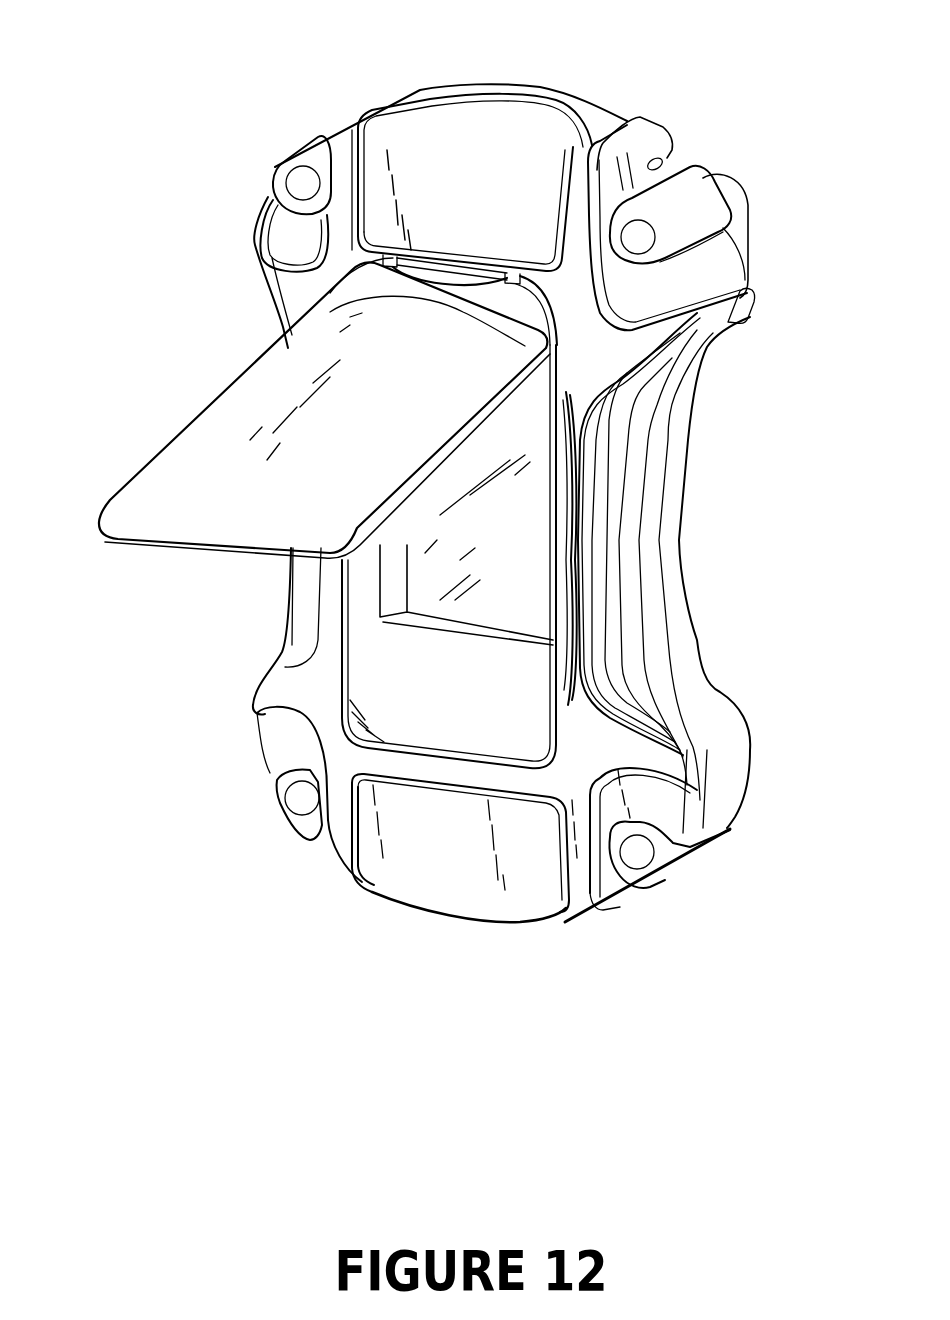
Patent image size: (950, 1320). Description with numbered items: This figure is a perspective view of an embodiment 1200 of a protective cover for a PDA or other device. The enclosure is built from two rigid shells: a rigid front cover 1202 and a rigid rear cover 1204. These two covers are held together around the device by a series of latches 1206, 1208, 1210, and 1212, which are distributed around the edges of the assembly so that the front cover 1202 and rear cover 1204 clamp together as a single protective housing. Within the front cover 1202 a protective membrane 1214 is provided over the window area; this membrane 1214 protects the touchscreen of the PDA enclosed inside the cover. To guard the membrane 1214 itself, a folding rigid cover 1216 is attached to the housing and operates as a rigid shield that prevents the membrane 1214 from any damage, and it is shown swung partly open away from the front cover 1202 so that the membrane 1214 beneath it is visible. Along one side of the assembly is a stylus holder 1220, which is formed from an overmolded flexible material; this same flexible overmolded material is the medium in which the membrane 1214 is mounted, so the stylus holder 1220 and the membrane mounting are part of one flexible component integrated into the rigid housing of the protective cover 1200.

The protective cover 1200 is at (277, 1033).
The front cover 1202 is at (390, 865).
The rear cover 1204 is at (745, 787).
The latch 1206 is at (667, 863).
The latch 1208 is at (707, 182).
The latch 1210 is at (307, 132).
The latch 1212 is at (268, 798).
The protective membrane 1214 is at (417, 555).
The folding rigid cover 1216 is at (247, 425).
The stylus holder 1220 is at (577, 530).